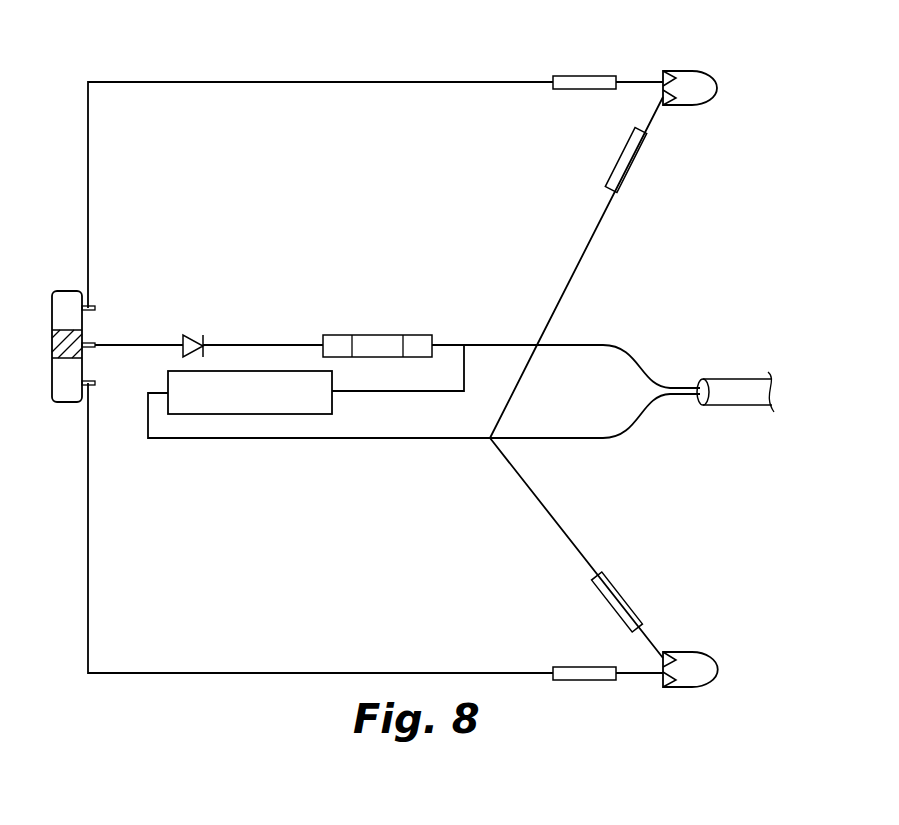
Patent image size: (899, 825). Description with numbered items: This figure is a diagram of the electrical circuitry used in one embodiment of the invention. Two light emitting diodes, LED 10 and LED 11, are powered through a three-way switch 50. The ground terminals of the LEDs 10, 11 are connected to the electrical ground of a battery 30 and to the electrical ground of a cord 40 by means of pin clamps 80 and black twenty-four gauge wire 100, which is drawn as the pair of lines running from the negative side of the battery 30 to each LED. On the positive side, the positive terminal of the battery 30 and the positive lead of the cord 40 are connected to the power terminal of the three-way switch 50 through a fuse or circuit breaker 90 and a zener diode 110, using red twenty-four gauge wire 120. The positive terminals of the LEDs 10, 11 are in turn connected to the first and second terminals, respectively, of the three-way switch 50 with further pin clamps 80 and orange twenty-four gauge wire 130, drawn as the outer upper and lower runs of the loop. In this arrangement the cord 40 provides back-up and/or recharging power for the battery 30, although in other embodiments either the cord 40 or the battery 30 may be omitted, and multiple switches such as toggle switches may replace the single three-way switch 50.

The LED 10 is at (718, 667).
The LED 11 is at (708, 71).
The battery 30 is at (334, 403).
The cord 40 is at (717, 378).
The 3-way switch 50 is at (50, 316).
The pin clamp 80 is at (576, 75).
The fuse 90 is at (373, 335).
The wire 100 is at (589, 241).
The zener diode 110 is at (197, 328).
The wire 120 is at (125, 345).
The wire 130 is at (150, 81).